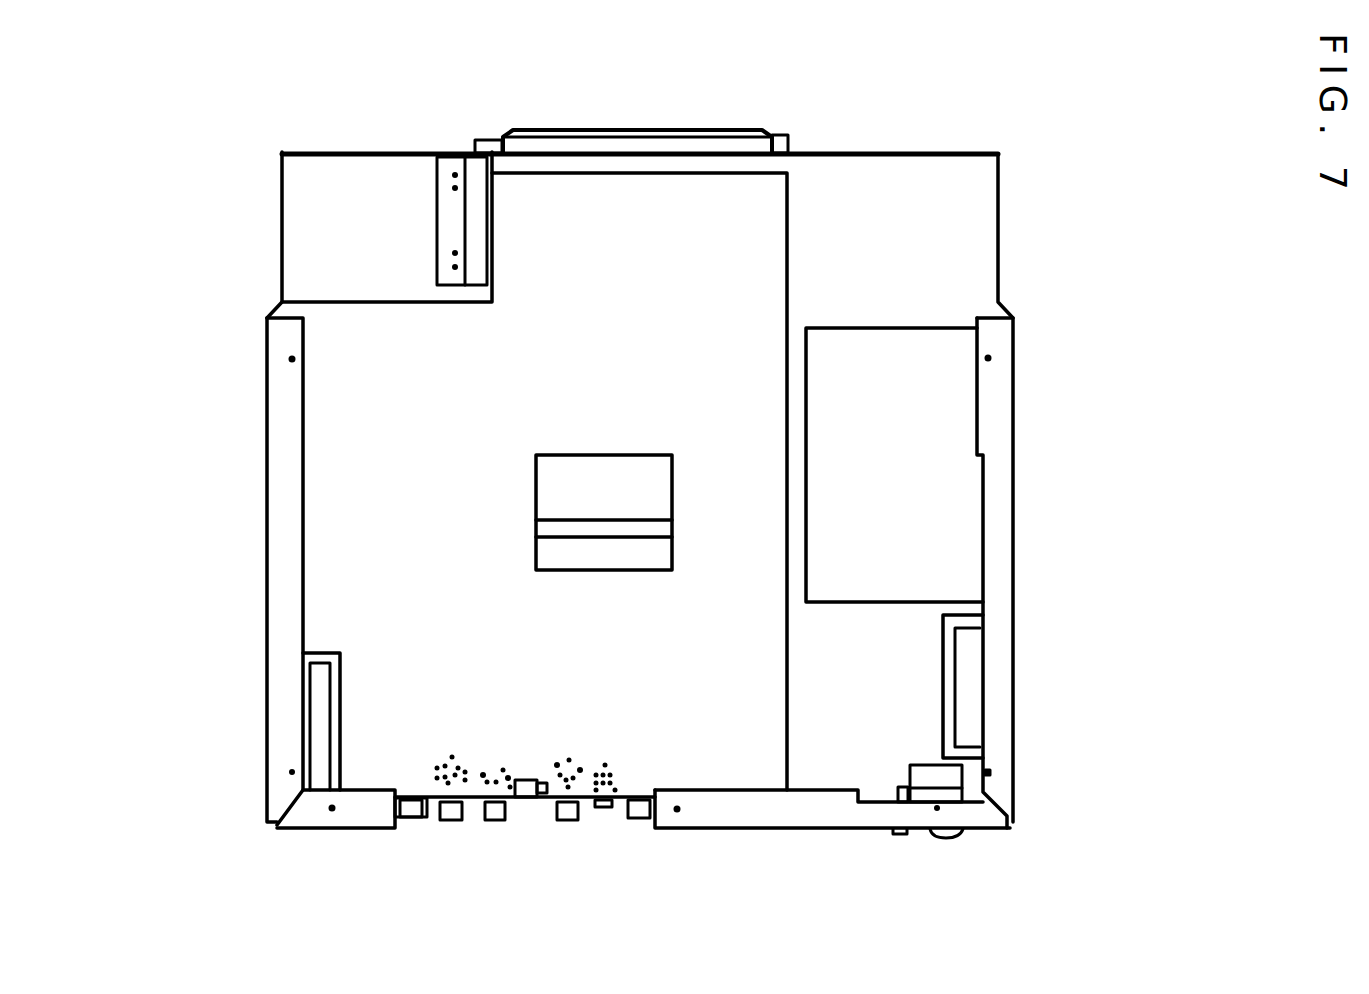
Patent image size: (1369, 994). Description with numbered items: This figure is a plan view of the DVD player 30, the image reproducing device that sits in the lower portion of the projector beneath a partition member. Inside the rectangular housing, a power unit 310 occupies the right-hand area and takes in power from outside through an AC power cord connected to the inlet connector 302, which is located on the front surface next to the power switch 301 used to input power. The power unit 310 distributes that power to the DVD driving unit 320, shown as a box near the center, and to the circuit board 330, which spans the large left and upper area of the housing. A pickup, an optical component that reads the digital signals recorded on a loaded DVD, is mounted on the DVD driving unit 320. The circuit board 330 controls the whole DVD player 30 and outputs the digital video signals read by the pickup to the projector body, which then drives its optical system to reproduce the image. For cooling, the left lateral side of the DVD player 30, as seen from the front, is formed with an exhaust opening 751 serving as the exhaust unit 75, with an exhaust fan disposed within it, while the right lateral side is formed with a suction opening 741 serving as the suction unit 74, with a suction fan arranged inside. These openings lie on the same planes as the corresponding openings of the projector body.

The DVD player 30 is at (639, 487).
The circuit board 330 is at (773, 245).
The power unit 310 is at (962, 415).
The DVD driving unit 320 is at (617, 565).
The suction unit 74 is at (1041, 686).
The suction opening 741 is at (973, 682).
The exhaust unit 75 is at (230, 721).
The exhaust opening 751 is at (313, 728).
The power switch 301 is at (957, 833).
The inlet connector 302 is at (892, 833).